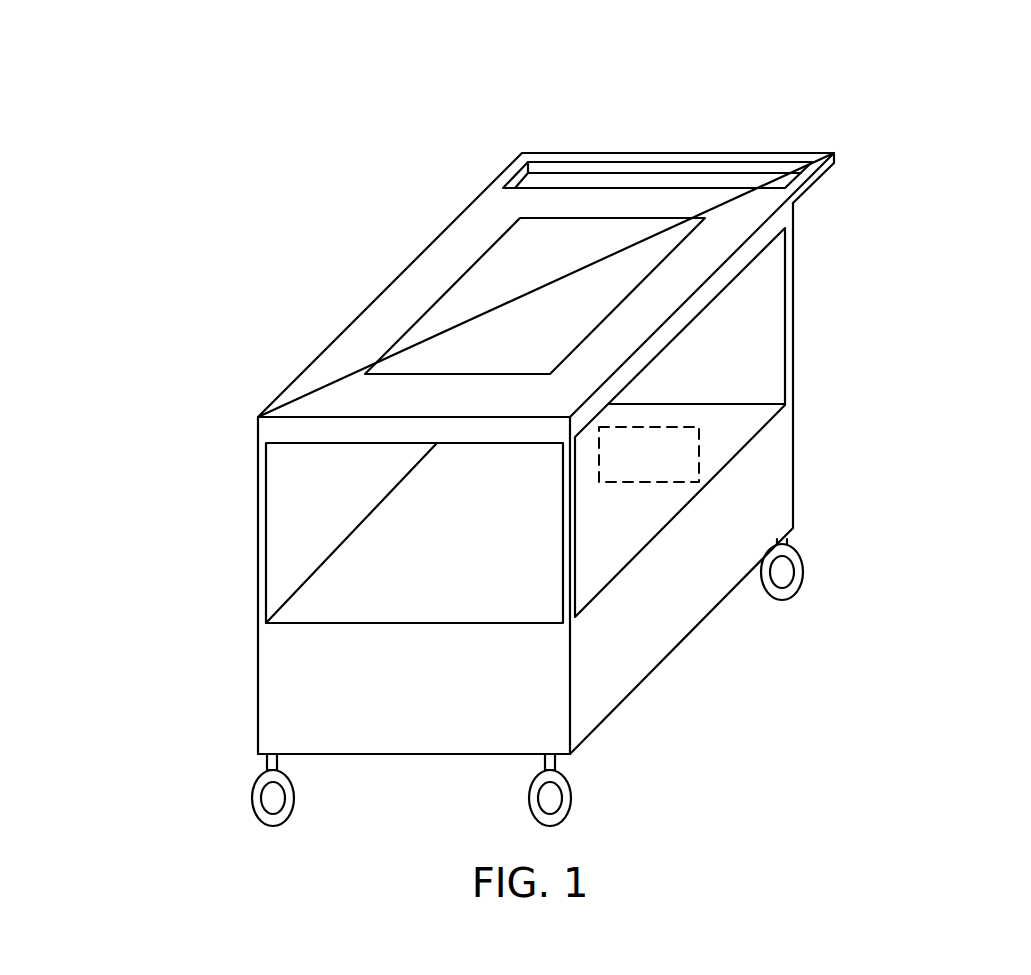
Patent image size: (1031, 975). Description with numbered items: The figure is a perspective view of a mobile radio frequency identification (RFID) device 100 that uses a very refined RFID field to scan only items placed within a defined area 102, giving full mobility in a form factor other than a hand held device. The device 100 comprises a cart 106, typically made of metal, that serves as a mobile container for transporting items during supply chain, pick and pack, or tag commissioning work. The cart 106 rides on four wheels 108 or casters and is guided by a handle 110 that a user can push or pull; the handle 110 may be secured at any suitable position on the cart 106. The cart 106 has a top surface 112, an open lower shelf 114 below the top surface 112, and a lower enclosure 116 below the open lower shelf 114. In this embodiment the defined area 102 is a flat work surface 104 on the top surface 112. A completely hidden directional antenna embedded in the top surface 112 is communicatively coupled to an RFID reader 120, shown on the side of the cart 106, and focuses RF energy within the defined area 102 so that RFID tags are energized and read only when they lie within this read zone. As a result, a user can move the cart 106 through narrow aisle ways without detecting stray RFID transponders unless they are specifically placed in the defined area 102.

The mobile radio frequency identification (RFID) device 100 is at (893, 120).
The defined area 102 is at (483, 282).
The flat work surface 104 is at (622, 340).
The cart 106 is at (795, 273).
The wheels 108 is at (294, 800).
The handle 110 is at (748, 152).
The top surface 112 is at (277, 398).
The open lower shelf 114 is at (297, 582).
The lower enclosure 116 is at (258, 688).
The RFID reader 120 is at (699, 460).